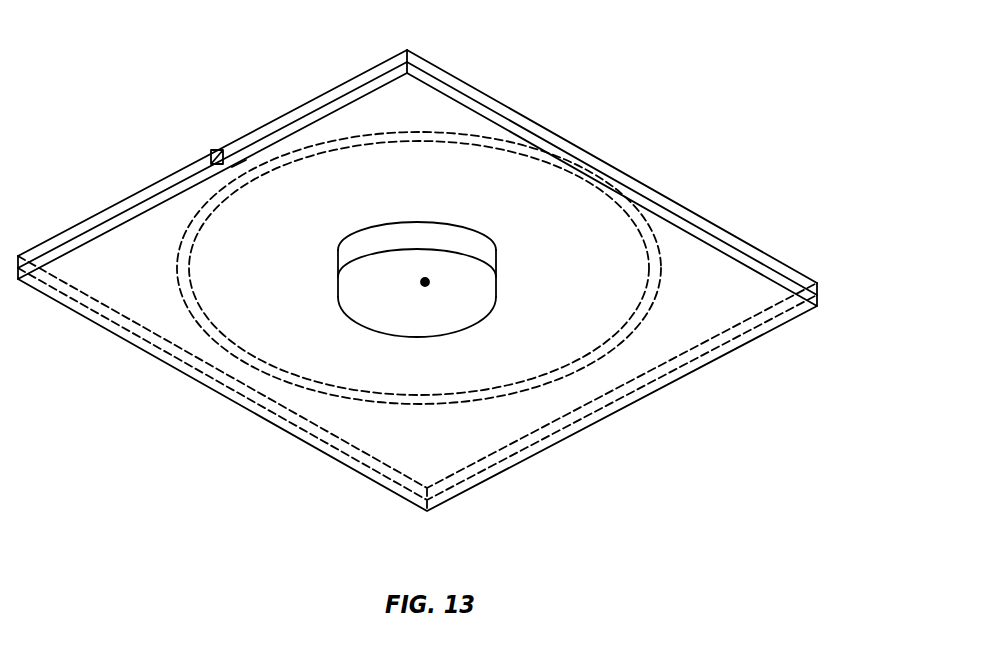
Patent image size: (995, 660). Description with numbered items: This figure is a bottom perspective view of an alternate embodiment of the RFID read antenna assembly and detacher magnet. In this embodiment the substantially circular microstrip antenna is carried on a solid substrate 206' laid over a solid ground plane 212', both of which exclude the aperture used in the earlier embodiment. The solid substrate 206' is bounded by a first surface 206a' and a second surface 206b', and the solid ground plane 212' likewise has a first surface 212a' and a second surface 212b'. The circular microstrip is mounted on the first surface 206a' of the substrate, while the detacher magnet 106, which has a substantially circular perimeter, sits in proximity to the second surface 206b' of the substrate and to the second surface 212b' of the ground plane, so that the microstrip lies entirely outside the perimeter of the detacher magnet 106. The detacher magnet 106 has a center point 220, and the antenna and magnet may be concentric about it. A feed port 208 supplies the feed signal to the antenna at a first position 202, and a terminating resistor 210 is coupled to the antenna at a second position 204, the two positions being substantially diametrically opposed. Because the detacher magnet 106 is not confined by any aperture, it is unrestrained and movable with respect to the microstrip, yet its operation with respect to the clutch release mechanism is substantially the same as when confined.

The first surface of ground plane 212a' is at (291, 148).
The second surface of ground plane 212b' is at (316, 170).
The solid ground plane 212' is at (417, 383).
The first surface of substrate 206a' is at (612, 166).
The second surface of substrate 206b' is at (623, 178).
The solid substrate 206' is at (648, 189).
The first position 202 is at (592, 375).
The feed port 208 is at (622, 397).
The detacher magnet 106 is at (497, 278).
The center point 220 is at (425, 282).
The terminating resistor 210 is at (212, 156).
The second position 204 is at (232, 167).